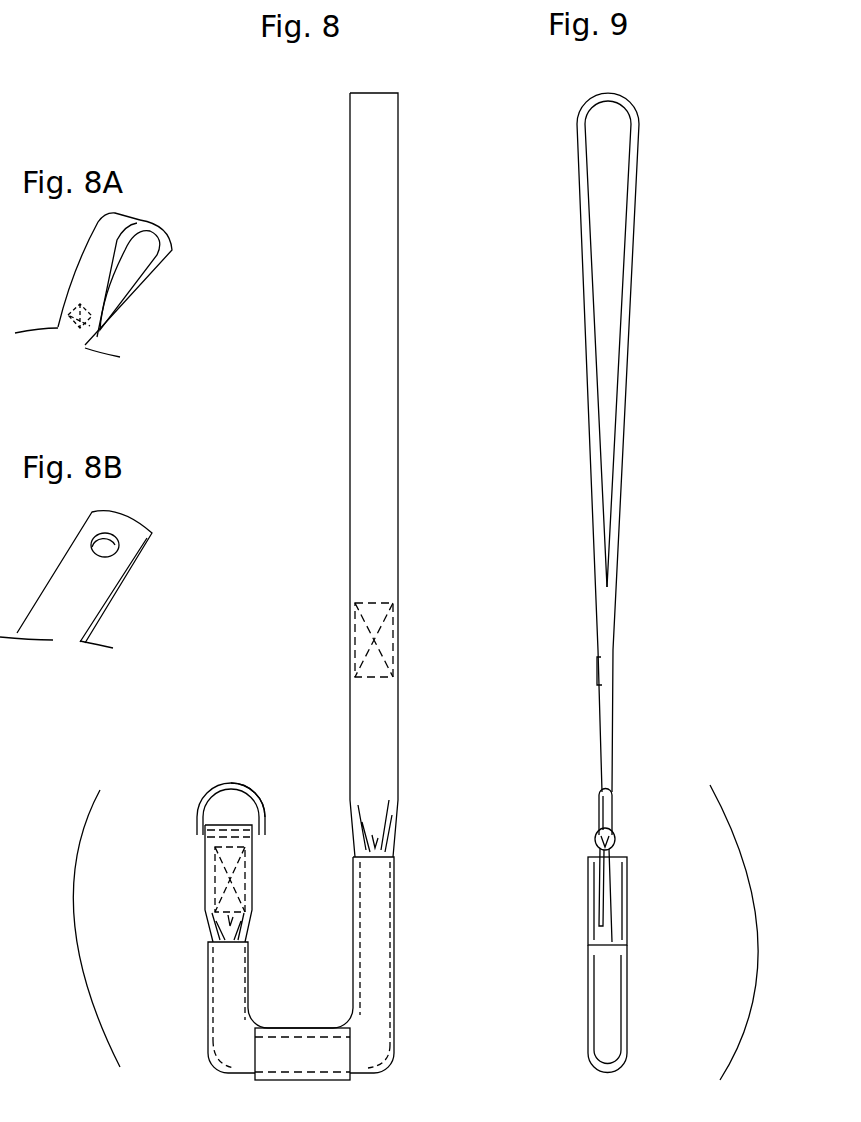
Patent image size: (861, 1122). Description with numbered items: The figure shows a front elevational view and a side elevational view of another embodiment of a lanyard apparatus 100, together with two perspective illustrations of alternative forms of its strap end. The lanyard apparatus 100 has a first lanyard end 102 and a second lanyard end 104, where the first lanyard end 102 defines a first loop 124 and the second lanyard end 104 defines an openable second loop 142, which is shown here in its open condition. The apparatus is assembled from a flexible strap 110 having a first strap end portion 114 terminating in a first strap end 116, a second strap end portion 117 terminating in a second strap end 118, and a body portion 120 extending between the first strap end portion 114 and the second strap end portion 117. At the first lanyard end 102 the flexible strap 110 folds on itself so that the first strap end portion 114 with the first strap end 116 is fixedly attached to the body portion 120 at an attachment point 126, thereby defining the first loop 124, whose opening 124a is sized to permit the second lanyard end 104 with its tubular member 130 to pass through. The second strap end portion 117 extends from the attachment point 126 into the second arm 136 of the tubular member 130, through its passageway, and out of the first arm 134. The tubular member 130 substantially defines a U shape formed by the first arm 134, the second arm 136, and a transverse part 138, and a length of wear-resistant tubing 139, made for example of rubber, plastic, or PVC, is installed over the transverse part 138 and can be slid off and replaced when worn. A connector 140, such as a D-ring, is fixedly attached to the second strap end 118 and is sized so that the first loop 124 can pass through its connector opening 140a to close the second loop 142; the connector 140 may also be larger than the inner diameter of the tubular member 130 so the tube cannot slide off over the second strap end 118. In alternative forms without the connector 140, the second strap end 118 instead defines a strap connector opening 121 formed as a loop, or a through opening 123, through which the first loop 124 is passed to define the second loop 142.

In FIG. 8, the lanyard apparatus 100 is at (315, 162).
In FIG. 9, the lanyard apparatus 100 is at (665, 150).
In FIG. 8, the first lanyard end 102 is at (431, 172).
In FIG. 9, the first lanyard end 102 is at (557, 148).
In FIG. 8, the second lanyard end 104 is at (458, 856).
In FIG. 9, the second lanyard end 104 is at (538, 844).
In FIG. 8, the flexible strap 110 is at (398, 424).
In FIG. 9, the flexible strap 110 is at (595, 455).
In FIG. 8, the first strap end portion 114 is at (386, 318).
In FIG. 9, the first strap end portion 114 is at (592, 349).
In FIG. 9, the first strap end 116 is at (600, 673).
In FIG. 8, the second strap end portion 117 is at (251, 924).
In FIG. 9, the second strap end portion 117 is at (602, 883).
In FIG. 8, the second strap end 118 is at (212, 841).
In FIG. 8A, the second strap end 118 is at (90, 241).
In FIG. 8B, the second strap end 118 is at (95, 525).
In FIG. 9, the second strap end 118 is at (611, 836).
In FIG. 9, the body portion 120 is at (621, 480).
In FIG. 8A, the strap connector opening 121 is at (150, 265).
In FIG. 8B, the through opening 123 is at (118, 547).
In FIG. 9, the first loop 124 is at (627, 220).
In FIG. 9, the opening of first loop 124a is at (602, 237).
In FIG. 8, the attachment point 126 is at (375, 640).
In FIG. 9, the attachment point 126 is at (600, 655).
In FIG. 8, the tubular member 130 is at (395, 990).
In FIG. 9, the tubular member 130 is at (588, 1010).
In FIG. 8, the first arm 134 is at (237, 965).
In FIG. 9, the first arm 134 is at (619, 985).
In FIG. 8, the second arm 136 is at (383, 938).
In FIG. 9, the second arm 136 is at (620, 894).
In FIG. 8, the transverse part 138 is at (312, 1053).
In FIG. 9, the transverse part 138 is at (612, 1064).
In FIG. 8, the wear-resistant tubing 139 is at (276, 1031).
In FIG. 8, the connector 140 is at (200, 819).
In FIG. 9, the connector 140 is at (604, 812).
In FIG. 8, the connector opening 140a is at (214, 803).
In FIG. 8, the second loop 142 is at (70, 928).
In FIG. 9, the second loop 142 is at (567, 817).